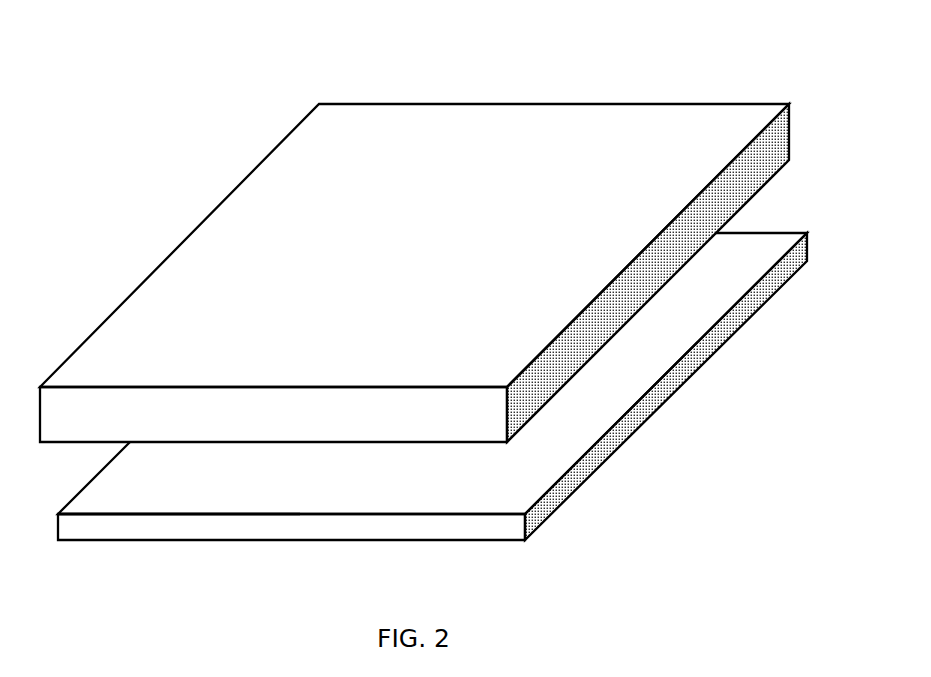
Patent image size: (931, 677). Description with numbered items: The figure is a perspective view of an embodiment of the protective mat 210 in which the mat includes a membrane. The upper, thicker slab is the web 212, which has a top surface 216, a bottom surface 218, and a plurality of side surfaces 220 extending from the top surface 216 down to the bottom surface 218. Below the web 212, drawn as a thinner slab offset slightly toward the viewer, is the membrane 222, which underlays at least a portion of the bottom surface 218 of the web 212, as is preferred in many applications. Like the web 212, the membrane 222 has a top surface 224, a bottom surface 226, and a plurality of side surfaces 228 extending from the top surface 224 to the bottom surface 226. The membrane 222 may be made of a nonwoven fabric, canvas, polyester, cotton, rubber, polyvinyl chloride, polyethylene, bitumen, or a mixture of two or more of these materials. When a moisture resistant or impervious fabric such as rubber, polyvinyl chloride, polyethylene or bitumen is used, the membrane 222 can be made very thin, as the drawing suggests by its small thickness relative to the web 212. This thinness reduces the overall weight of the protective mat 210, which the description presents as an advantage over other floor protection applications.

The protective mat 210 is at (572, 82).
The web 212 is at (435, 233).
The top surface 216 is at (280, 210).
The bottom surface 218 is at (698, 265).
The side surfaces 220 is at (417, 289).
The membrane 222 is at (368, 483).
The top surface 224 is at (158, 493).
The bottom surface 226 is at (342, 542).
The side surfaces 228 is at (628, 413).